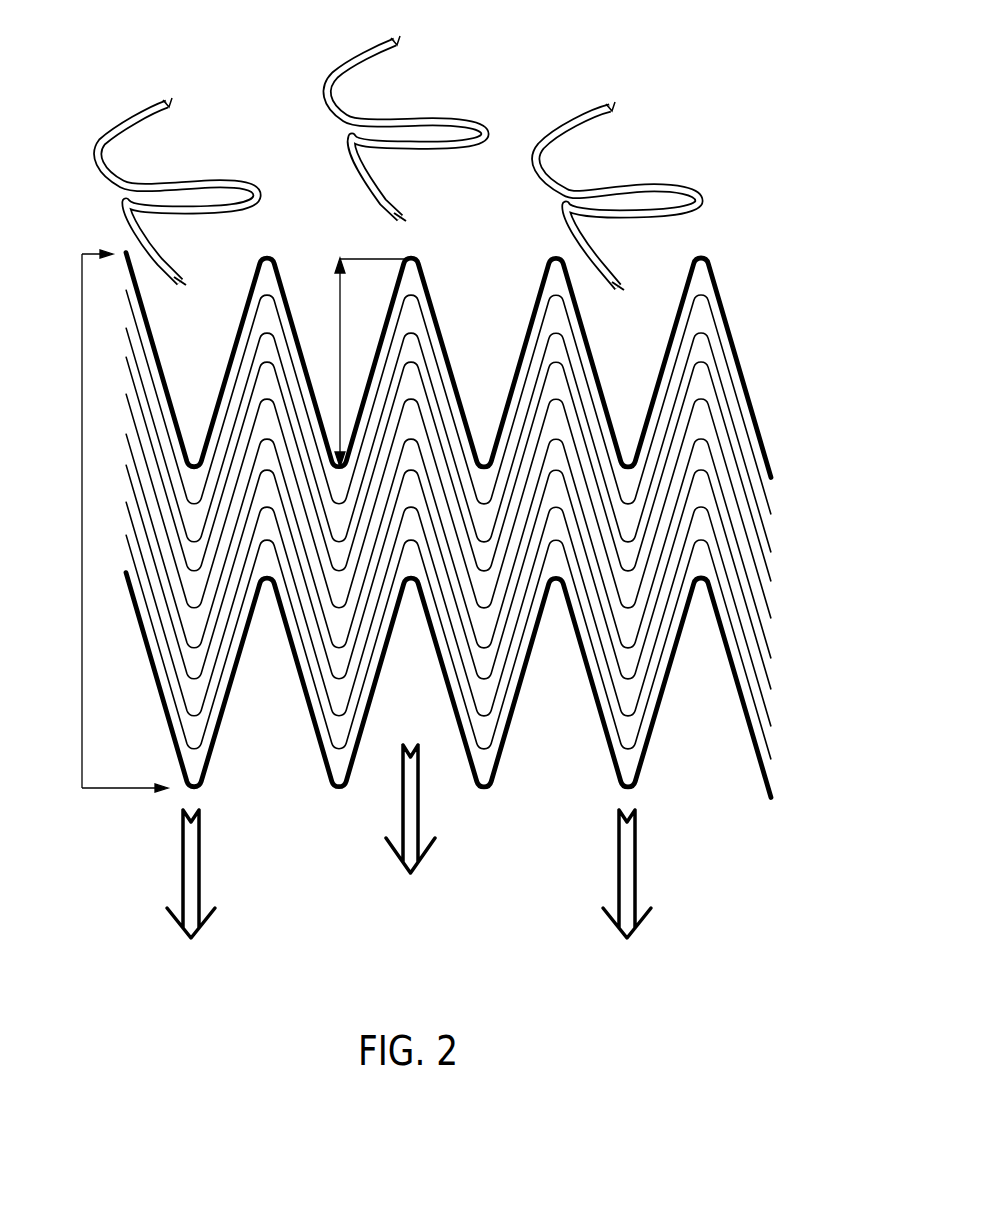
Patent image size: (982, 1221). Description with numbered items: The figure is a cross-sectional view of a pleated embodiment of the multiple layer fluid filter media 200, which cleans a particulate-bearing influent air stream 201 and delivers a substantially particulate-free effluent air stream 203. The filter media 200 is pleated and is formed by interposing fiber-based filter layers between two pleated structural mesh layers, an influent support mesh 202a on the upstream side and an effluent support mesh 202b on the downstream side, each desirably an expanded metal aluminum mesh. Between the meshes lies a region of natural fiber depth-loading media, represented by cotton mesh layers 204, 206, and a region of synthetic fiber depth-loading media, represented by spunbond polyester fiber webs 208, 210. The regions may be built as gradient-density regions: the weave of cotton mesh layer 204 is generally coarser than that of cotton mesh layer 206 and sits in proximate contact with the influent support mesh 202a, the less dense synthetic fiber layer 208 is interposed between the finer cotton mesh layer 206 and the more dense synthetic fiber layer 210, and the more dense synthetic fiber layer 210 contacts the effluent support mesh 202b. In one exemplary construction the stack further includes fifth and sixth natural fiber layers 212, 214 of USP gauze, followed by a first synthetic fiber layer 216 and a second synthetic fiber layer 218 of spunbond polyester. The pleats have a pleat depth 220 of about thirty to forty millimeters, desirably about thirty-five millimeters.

The filter media 200 is at (80, 547).
The influent air stream 201 is at (480, 120).
The influent support mesh 202a is at (730, 327).
The effluent support mesh 202b is at (738, 712).
The effluent air stream 203 is at (420, 798).
The cotton mesh layer 204 is at (766, 488).
The cotton mesh layer 206 is at (768, 532).
The synthetic fiber layer 208 is at (766, 568).
The synthetic fiber layer 210 is at (766, 612).
The fifth natural fiber layer 212 is at (767, 645).
The sixth natural fiber layer 214 is at (766, 683).
The first synthetic fiber layer 216 is at (766, 725).
The second synthetic fiber layer 218 is at (766, 752).
The pleat depth 220 is at (340, 333).